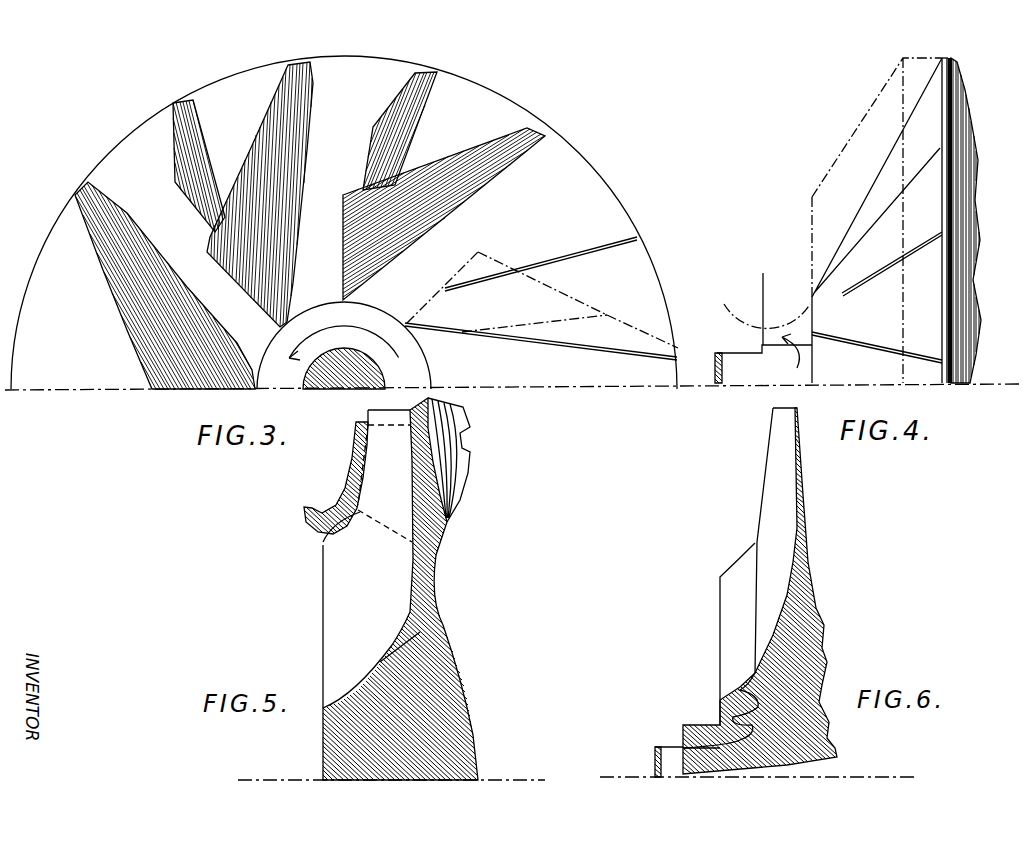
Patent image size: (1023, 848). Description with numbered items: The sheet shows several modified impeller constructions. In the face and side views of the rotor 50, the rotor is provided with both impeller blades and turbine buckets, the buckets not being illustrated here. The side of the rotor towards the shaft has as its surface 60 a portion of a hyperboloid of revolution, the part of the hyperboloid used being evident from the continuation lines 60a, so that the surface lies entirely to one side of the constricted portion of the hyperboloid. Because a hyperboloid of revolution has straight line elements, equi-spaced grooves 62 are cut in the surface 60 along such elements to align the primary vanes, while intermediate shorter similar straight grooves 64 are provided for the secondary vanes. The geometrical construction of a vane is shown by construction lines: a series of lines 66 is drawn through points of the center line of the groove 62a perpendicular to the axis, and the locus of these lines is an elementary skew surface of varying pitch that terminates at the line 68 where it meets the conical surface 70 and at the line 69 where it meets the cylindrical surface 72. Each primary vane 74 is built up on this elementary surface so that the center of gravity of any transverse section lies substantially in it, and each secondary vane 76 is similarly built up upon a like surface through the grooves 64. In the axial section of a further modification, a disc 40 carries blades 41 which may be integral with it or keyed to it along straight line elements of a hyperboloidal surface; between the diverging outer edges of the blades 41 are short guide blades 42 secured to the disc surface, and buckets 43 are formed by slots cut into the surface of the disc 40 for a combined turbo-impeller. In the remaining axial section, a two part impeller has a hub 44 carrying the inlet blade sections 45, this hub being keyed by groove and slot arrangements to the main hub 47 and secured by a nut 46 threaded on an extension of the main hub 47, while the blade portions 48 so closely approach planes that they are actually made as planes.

In FIG. 3, the rotor 50 is at (583, 171).
In FIG. 4, the rotor 50 is at (930, 207).
In FIG. 3, the primary vane 74 is at (128, 320).
In FIG. 3, the secondary vane 76 is at (177, 133).
In FIG. 3, the intermediate shorter grooves 64 is at (557, 257).
In FIG. 4, the intermediate shorter grooves 64 is at (886, 258).
In FIG. 3, the groove 62a is at (507, 338).
In FIG. 3, the construction lines 66 is at (520, 308).
In FIG. 3, the line of intersection with conical surface 68 is at (583, 307).
In FIG. 4, the cylindrical surface 72 is at (925, 56).
In FIG. 4, the conical surface 70 is at (853, 133).
In FIG. 4, the hyperboloidal surface 60 is at (877, 220).
In FIG. 4, the continuation lines of the hyperboloid 60a is at (742, 313).
In FIG. 4, the equi-spaced grooves 62 is at (870, 345).
In FIG. 4, the line of intersection with cylindrical surface 69 is at (751, 349).
In FIG. 5, the disc 40 is at (463, 698).
In FIG. 5, the blades 41 is at (322, 600).
In FIG. 5, the short guide blades 42 is at (387, 425).
In FIG. 5, the buckets 43 is at (453, 472).
In FIG. 6, the hub 44 is at (720, 705).
In FIG. 6, the inlet blade sections 45 is at (725, 612).
In FIG. 6, the nut 46 is at (682, 735).
In FIG. 6, the main hub 47 is at (803, 668).
In FIG. 6, the blade portions 48 is at (780, 510).